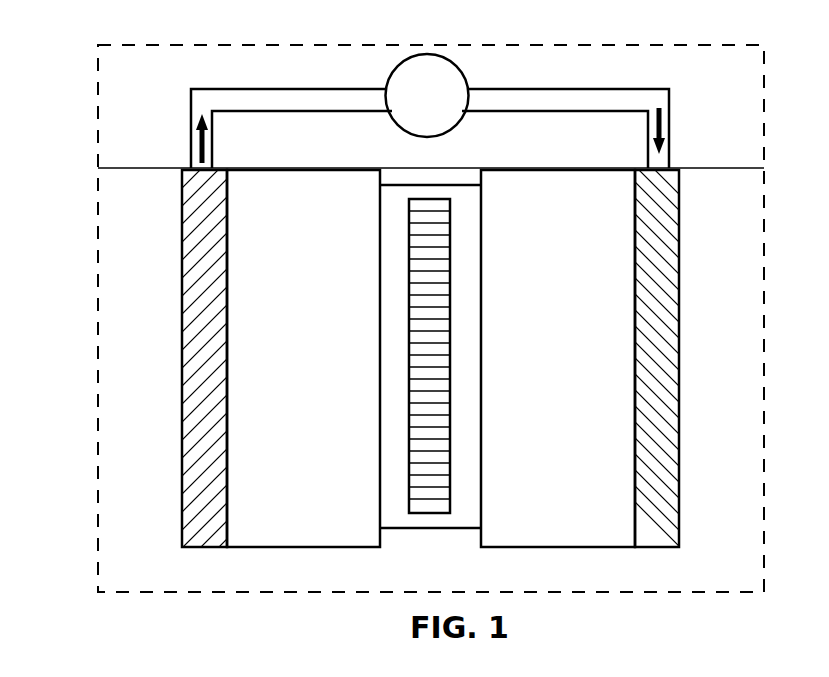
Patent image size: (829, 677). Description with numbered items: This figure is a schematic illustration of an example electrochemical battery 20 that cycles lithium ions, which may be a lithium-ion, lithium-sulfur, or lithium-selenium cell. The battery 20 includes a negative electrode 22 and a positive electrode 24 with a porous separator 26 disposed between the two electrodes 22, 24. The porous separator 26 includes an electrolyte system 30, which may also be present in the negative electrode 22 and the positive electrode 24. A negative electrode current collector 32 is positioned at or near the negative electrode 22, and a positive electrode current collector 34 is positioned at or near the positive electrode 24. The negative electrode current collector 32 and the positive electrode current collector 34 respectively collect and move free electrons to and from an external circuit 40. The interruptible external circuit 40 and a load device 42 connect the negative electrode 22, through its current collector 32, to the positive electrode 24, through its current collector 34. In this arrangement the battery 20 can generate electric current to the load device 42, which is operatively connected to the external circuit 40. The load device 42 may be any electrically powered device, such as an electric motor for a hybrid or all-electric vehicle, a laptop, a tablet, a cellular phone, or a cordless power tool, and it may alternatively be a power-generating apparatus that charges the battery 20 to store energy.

The battery 20 is at (72, 263).
The negative electrode 22 is at (313, 311).
The positive electrode 24 is at (572, 312).
The porous separator 26 is at (437, 529).
The electrolyte system 30 is at (432, 350).
The negative electrode current collector 32 is at (182, 257).
The positive electrode current collector 34 is at (679, 247).
The external circuit 40 is at (150, 40).
The load device 42 is at (441, 108).